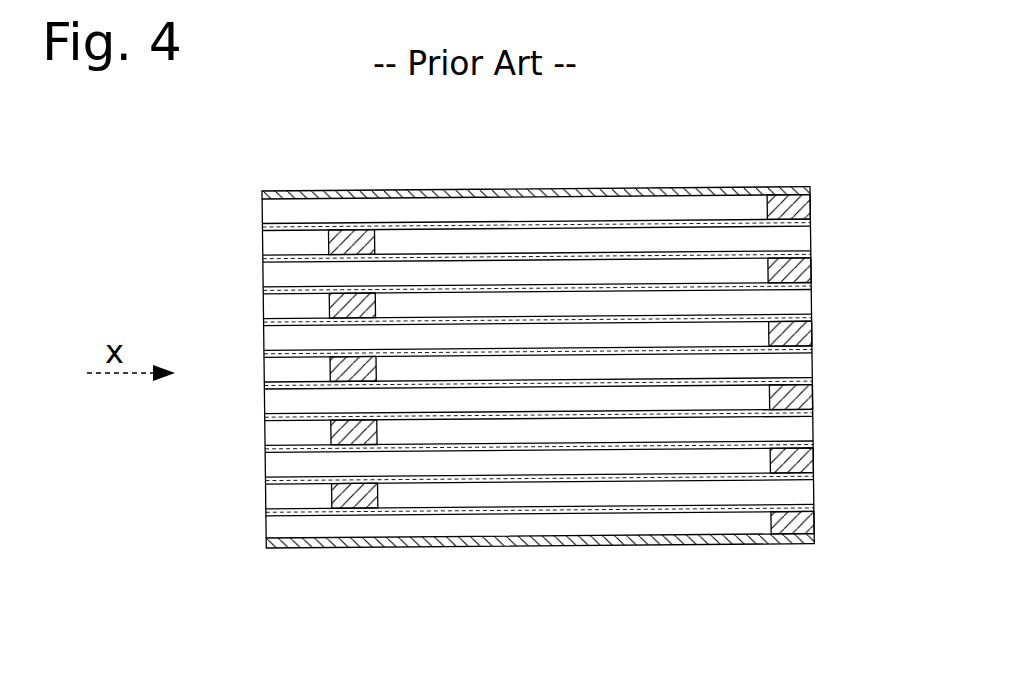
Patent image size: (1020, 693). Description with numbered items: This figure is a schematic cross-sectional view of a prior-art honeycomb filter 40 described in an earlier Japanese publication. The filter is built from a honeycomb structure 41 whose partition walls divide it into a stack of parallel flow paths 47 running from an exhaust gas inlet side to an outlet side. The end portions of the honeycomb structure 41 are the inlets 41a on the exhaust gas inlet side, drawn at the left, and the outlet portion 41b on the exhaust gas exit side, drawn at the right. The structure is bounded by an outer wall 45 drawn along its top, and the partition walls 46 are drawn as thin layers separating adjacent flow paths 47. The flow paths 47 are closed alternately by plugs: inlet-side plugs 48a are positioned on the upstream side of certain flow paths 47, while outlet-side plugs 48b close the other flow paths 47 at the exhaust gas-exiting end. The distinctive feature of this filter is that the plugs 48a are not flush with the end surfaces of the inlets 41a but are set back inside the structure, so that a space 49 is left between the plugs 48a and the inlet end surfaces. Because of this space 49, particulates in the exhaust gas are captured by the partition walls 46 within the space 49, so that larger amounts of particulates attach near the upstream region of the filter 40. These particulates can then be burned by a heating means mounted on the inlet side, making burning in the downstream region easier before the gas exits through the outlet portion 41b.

The honeycomb filter 40 is at (211, 178).
The honeycomb structure 41 is at (538, 176).
The inlets 41a is at (266, 497).
The outlet portion 41b is at (815, 484).
The top cover plate 45 is at (723, 190).
The thin sheet layer 46 is at (283, 257).
The flow paths 47 is at (277, 275).
The inlet-side plugs 48a is at (357, 495).
The outlet-side plugs 48b is at (793, 520).
The space 49 is at (297, 243).